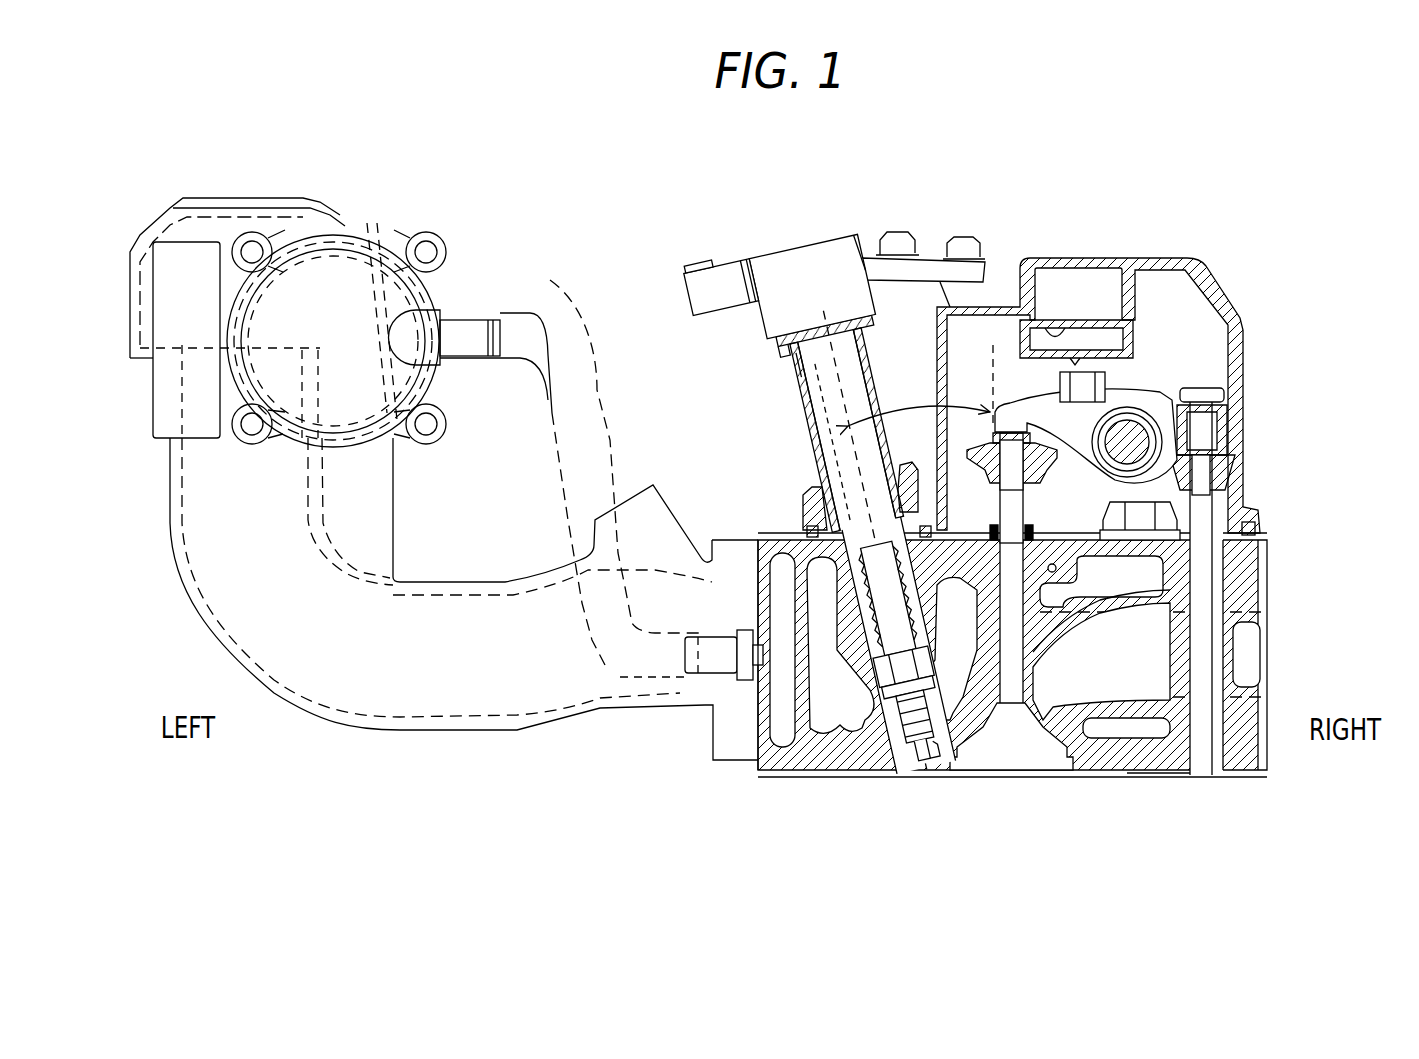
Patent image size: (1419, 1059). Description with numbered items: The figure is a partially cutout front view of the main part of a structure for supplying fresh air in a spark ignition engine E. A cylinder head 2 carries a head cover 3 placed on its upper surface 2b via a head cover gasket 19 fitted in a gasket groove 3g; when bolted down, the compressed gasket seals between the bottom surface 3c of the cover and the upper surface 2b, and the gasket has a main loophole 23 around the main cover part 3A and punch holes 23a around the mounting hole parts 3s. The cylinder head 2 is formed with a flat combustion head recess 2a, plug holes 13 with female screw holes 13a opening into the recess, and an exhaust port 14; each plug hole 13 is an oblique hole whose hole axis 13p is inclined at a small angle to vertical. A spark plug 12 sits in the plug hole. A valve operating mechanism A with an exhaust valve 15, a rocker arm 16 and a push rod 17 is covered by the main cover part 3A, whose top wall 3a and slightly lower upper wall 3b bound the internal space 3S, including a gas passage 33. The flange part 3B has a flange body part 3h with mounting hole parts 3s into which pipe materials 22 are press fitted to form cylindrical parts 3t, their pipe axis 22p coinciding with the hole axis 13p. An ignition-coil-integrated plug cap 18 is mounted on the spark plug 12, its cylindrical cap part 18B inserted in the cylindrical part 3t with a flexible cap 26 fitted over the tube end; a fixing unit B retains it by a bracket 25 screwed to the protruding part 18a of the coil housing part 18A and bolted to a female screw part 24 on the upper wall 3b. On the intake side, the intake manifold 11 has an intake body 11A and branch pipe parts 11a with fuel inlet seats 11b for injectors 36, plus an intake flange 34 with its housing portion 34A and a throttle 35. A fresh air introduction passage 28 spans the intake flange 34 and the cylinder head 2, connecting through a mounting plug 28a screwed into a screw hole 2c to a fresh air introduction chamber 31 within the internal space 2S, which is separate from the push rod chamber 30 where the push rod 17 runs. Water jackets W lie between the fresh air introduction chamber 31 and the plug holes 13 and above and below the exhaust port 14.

The cylinder head 2 is at (1268, 605).
The combustion head recess 2a is at (1067, 770).
The upper surface of the cylinder head 2b is at (1100, 397).
The screw hole 2c is at (713, 748).
The internal space of the cylinder head 2S is at (1076, 723).
The head cover 3 is at (984, 484).
The main cover part 3A is at (1110, 365).
The flange part 3B is at (800, 518).
The internal space of the head cover 3S is at (1100, 347).
The top wall 3a is at (1148, 272).
The upper wall 3b is at (1012, 295).
The bottom surface of the head cover 3c is at (1238, 545).
The gasket groove 3g is at (958, 547).
The flange body part 3h is at (907, 493).
The mounting hole part 3s is at (833, 468).
The cylindrical part 3t is at (746, 381).
The intake manifold 11 is at (168, 524).
The intake body 11A is at (397, 486).
The branch pipe part 11a is at (497, 737).
The fuel inlet seat 11b is at (660, 530).
The spark plug 12 is at (770, 614).
The plug hole 13 is at (891, 719).
The female screw hole 13a is at (910, 772).
The hole axis 13p is at (948, 782).
The exhaust port 14 is at (1183, 652).
The exhaust valve 15 is at (1020, 690).
The rocker arm 16 is at (1100, 395).
The push rod 17 is at (1235, 462).
The ignition-coil-integrated plug cap 18 is at (812, 420).
The coil housing part 18A is at (674, 492).
The cylindrical cap part 18B is at (780, 600).
The protruding part 18a is at (868, 256).
The head cover gasket 19 is at (935, 543).
The pipe material 22 is at (790, 380).
The pipe axis 22p is at (795, 355).
The main loophole 23 is at (1250, 533).
The punch hole 23a is at (700, 570).
The female screw part 24 is at (985, 272).
The bracket 25 is at (930, 285).
The cap 26 is at (770, 345).
The fresh air introduction passage 28 is at (597, 357).
The mounting plug 28a is at (755, 537).
The push rod chamber 30 is at (1262, 650).
The fresh air introduction chamber 31 is at (778, 778).
The gas passage 33 is at (1073, 283).
The intake flange 34 is at (350, 262).
The throttle body housing 34A is at (394, 297).
The throttle 35 is at (272, 212).
The injector 36 is at (582, 494).
The valve operating mechanism A is at (1190, 350).
The fixing unit B is at (937, 243).
The spark ignition engine E is at (1200, 207).
The water jacket W is at (833, 760).